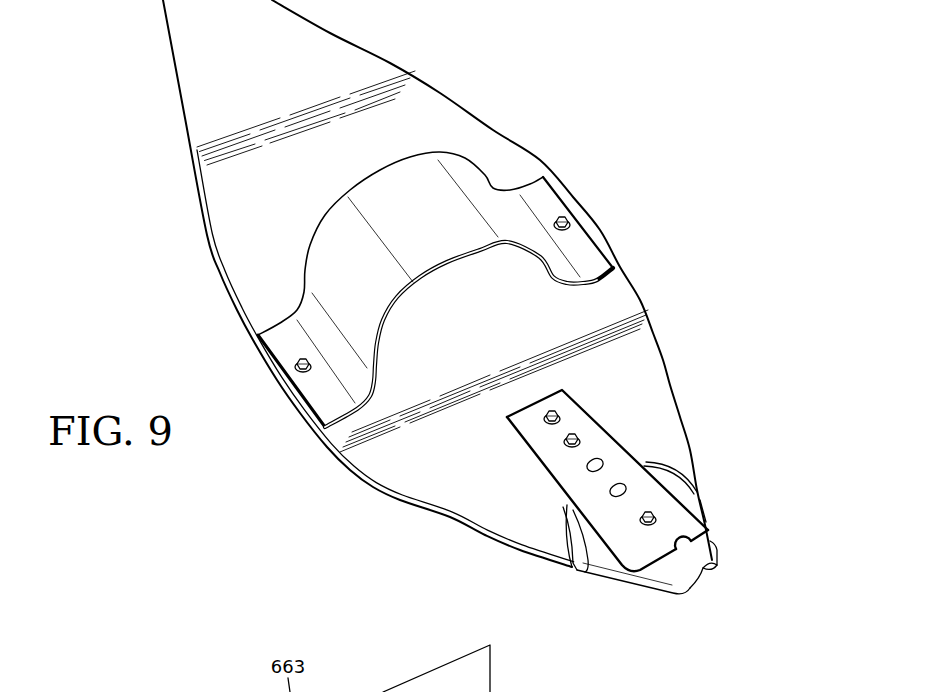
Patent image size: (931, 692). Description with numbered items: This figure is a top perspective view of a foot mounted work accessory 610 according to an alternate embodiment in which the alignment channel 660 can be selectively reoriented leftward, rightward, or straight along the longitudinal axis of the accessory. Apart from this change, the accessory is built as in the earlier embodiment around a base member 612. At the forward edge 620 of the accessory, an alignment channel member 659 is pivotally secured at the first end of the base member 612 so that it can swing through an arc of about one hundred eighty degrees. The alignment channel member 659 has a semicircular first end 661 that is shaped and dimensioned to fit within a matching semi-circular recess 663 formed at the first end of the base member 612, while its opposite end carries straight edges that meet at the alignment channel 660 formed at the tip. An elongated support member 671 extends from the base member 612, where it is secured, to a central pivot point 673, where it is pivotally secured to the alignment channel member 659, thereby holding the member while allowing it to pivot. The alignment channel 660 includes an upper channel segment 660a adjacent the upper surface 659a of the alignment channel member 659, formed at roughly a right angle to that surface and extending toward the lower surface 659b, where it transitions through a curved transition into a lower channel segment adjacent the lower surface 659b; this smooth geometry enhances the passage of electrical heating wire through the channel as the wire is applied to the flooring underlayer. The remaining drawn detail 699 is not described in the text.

The foot mounted work accessory 610 is at (185, 259).
The base member 612 is at (398, 468).
The forward edge 620 is at (695, 596).
The alignment channel member 659 is at (718, 563).
The upper surface 659a is at (718, 550).
The lower surface 659b is at (638, 592).
The alignment channel 660 is at (695, 596).
The upper channel segment 660a is at (710, 538).
The semicircular first end 661 is at (690, 476).
The semi-circular recess 663 is at (572, 572).
The elongated support member 671 is at (664, 495).
The central pivot point 673 is at (640, 524).
The hull edge 699 is at (700, 503).